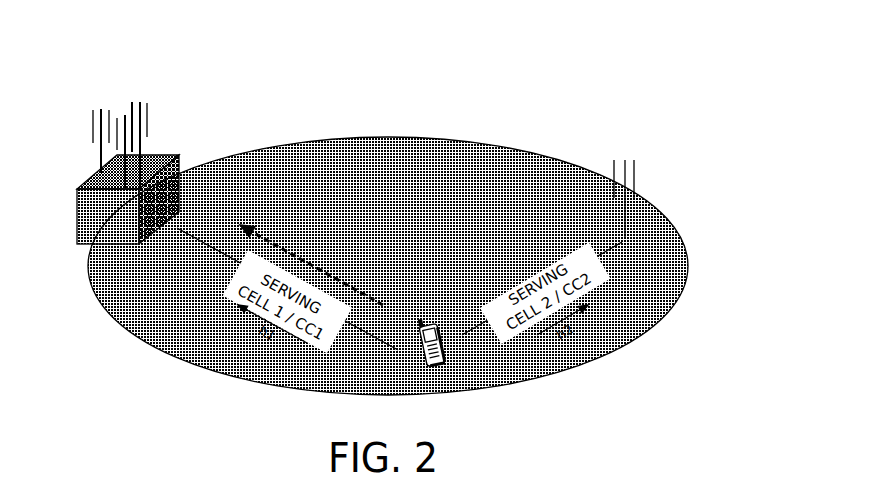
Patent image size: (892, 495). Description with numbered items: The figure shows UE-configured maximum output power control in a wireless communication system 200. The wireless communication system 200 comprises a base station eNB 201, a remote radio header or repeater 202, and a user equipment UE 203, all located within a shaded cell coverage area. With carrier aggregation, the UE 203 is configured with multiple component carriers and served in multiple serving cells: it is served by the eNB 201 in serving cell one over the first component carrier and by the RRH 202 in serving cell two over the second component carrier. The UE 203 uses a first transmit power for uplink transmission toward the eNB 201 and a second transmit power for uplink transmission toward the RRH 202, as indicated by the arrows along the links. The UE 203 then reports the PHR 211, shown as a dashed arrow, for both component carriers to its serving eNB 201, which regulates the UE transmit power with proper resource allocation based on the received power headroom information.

The wireless communication system 200 is at (732, 47).
The base station eNB 201 is at (148, 122).
The remote radio header (RRH) or repeater 202 is at (636, 168).
The user equipment UE 203 is at (433, 320).
The PHR 211 is at (295, 262).